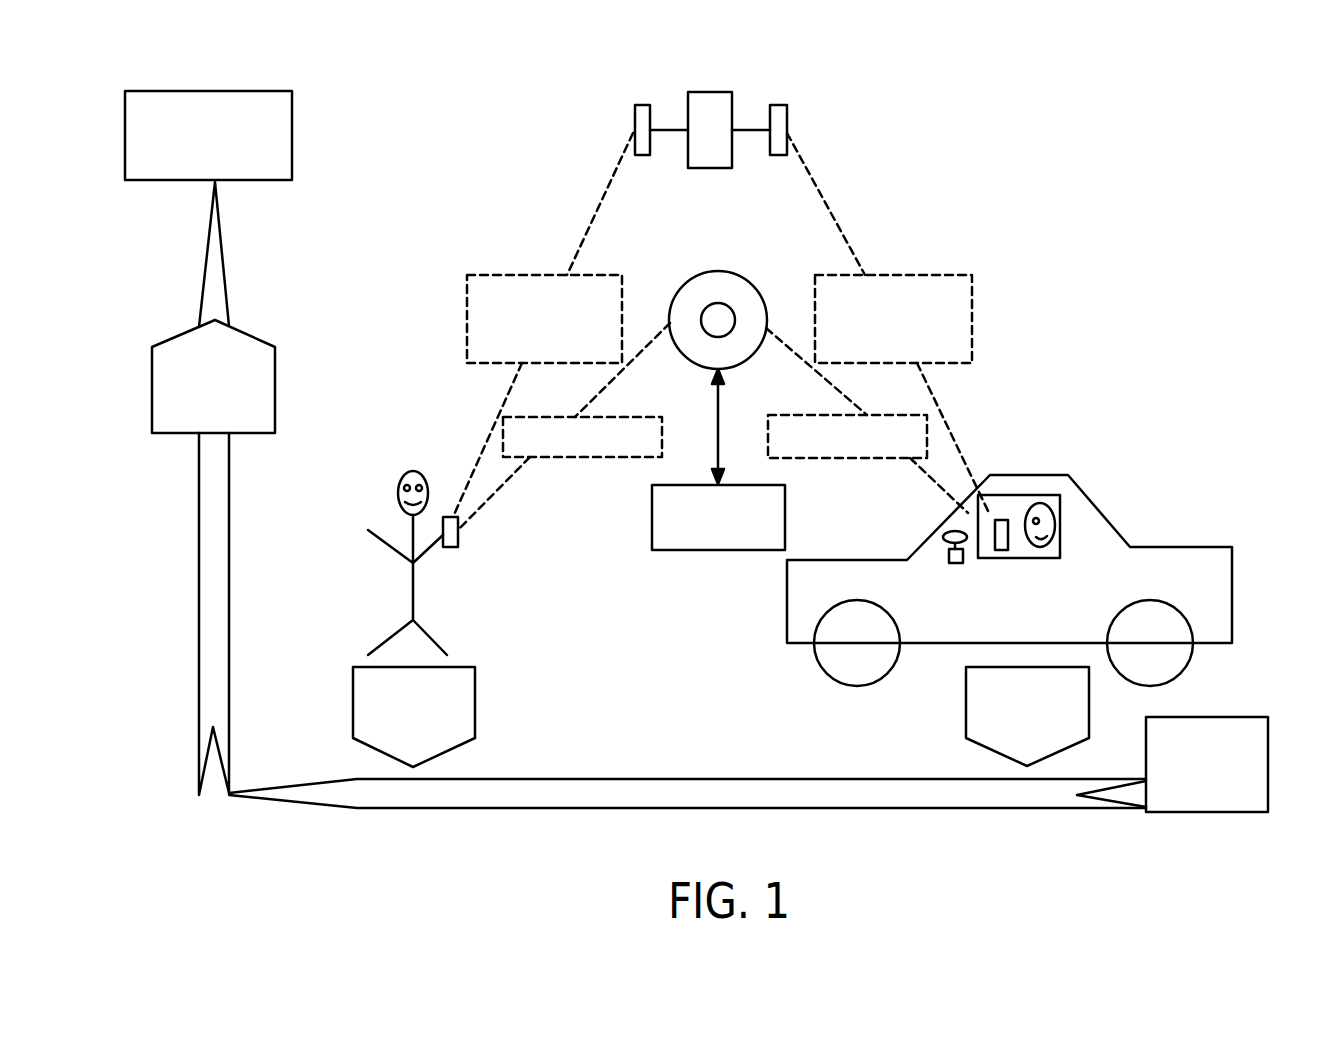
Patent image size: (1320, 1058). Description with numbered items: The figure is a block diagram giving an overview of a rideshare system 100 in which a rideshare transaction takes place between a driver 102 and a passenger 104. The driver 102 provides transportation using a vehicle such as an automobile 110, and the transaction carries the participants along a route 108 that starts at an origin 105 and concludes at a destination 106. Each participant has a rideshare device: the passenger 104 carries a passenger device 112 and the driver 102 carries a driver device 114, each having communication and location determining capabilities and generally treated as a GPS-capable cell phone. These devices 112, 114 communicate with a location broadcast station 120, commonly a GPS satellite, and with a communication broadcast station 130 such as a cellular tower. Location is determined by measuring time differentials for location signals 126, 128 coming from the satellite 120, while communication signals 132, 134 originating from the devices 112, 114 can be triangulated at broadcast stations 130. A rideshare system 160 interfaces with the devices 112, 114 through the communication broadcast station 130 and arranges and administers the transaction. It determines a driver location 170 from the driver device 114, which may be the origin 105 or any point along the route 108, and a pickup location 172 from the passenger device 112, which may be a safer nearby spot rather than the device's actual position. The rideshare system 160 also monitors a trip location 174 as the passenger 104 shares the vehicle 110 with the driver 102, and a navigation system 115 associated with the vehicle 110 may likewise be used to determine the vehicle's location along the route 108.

The rideshare system 100 is at (977, 180).
The driver 102 is at (1040, 503).
The passenger 104 is at (413, 471).
The origin 105 is at (1255, 717).
The destination 106 is at (292, 133).
The route 108 is at (229, 552).
The automobile 110 is at (1118, 525).
The passenger rideshare device 112 is at (458, 538).
The driver rideshare device 114 is at (1000, 552).
The navigation system 115 is at (955, 563).
The location broadcast station 120 is at (710, 92).
The location signal 126 is at (972, 315).
The location signal 128 is at (505, 275).
The communication broadcast station 130 is at (720, 271).
The communication signal 132 is at (862, 458).
The communication signal 134 is at (620, 457).
The rideshare system 160 is at (718, 552).
The driver location 170 is at (966, 718).
The pickup location 172 is at (475, 715).
The trip location 174 is at (275, 372).